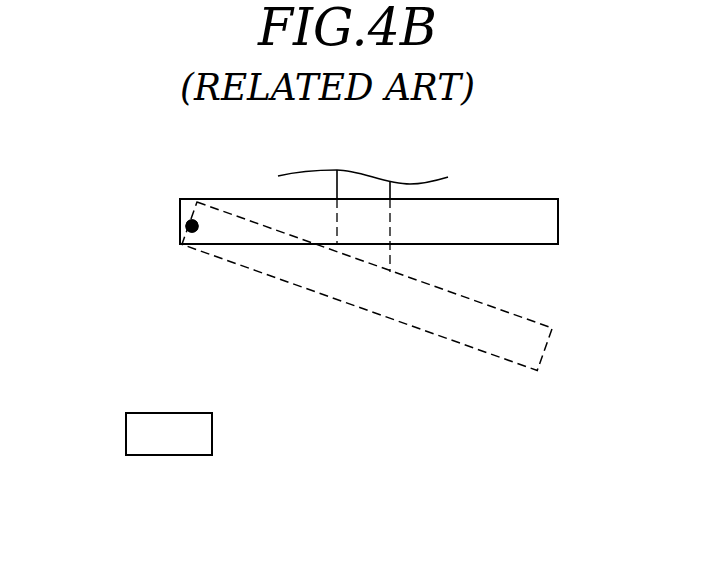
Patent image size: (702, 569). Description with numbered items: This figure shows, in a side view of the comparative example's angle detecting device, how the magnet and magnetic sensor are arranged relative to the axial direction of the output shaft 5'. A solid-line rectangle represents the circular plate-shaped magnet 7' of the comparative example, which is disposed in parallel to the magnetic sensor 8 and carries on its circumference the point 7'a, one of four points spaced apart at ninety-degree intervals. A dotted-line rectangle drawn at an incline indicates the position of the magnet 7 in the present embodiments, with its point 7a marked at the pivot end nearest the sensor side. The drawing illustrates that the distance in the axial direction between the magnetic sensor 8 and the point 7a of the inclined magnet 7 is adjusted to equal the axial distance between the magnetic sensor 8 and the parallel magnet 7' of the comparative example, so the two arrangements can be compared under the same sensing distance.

The output shaft 5' is at (363, 200).
The magnet 7' is at (369, 200).
The magnet 7 is at (386, 286).
The point of the magnet 7a is at (188, 225).
The point on the circumference of the magnet 7'a is at (151, 215).
The magnetic sensor 8 is at (136, 427).